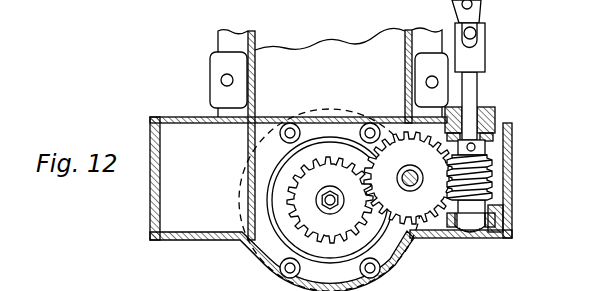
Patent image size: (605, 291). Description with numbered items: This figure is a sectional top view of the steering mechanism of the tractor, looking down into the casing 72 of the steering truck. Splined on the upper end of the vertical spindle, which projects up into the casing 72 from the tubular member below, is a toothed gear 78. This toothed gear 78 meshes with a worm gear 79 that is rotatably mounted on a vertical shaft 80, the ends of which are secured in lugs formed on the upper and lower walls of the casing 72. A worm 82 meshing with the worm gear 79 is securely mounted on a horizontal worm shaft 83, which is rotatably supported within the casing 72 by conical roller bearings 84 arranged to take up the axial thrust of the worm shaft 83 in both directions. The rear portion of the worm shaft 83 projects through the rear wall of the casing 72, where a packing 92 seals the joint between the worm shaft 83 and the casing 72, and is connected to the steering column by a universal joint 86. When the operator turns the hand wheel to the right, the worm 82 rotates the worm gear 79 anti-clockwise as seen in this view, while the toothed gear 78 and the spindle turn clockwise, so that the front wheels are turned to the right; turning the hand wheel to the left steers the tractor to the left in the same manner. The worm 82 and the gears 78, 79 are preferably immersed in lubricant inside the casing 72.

The casing 72 is at (183, 117).
The toothed gear 78 is at (330, 209).
The worm gear 79 is at (410, 223).
The vertical shaft 80 is at (413, 188).
The worm 82 is at (494, 178).
The worm shaft 83 is at (477, 88).
The conical roller bearings 84 is at (493, 145).
The universal joint 86 is at (485, 33).
The packing 92 is at (486, 118).